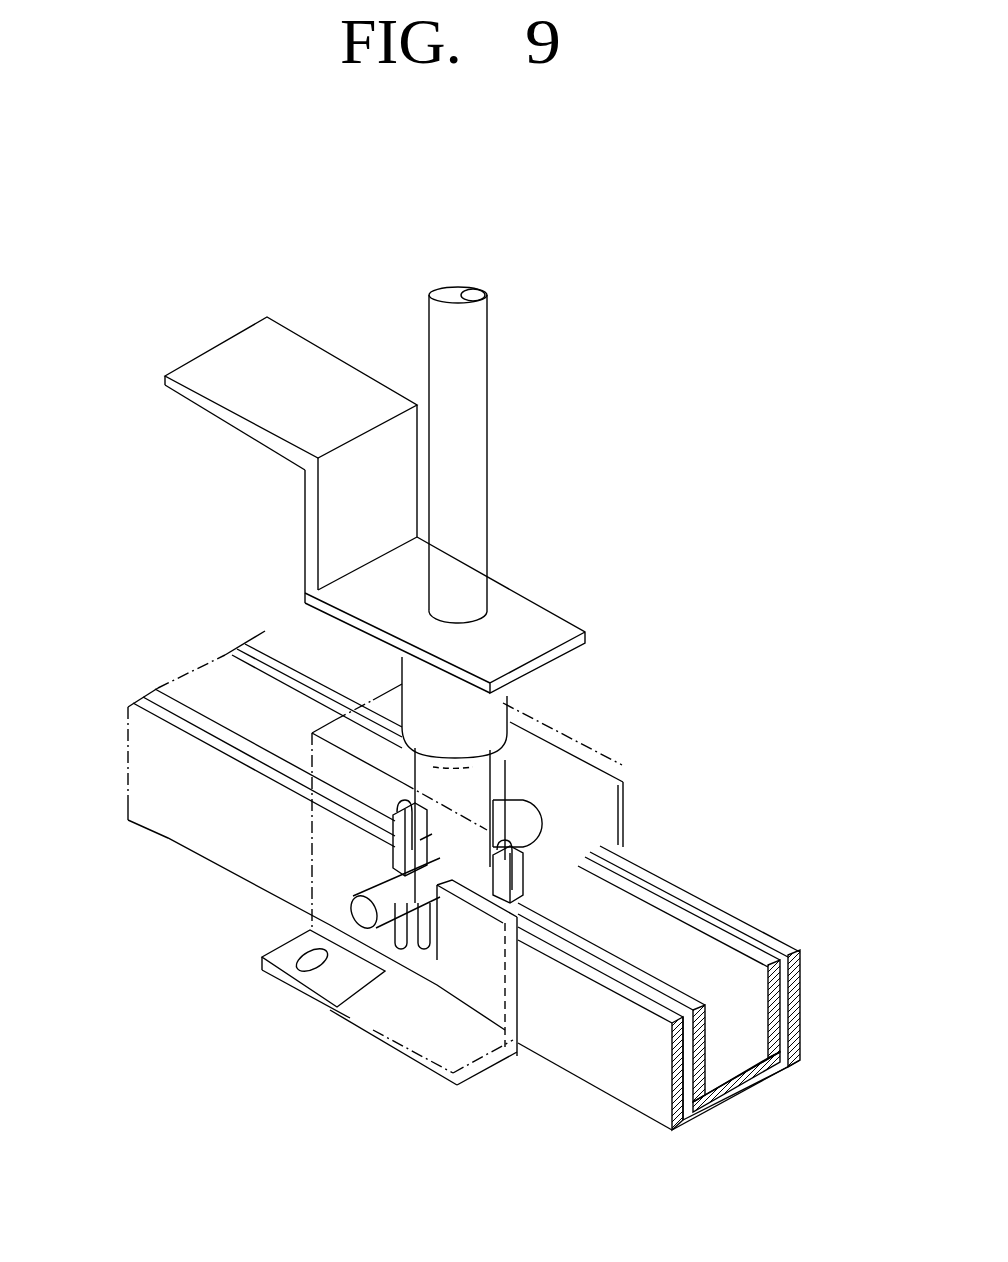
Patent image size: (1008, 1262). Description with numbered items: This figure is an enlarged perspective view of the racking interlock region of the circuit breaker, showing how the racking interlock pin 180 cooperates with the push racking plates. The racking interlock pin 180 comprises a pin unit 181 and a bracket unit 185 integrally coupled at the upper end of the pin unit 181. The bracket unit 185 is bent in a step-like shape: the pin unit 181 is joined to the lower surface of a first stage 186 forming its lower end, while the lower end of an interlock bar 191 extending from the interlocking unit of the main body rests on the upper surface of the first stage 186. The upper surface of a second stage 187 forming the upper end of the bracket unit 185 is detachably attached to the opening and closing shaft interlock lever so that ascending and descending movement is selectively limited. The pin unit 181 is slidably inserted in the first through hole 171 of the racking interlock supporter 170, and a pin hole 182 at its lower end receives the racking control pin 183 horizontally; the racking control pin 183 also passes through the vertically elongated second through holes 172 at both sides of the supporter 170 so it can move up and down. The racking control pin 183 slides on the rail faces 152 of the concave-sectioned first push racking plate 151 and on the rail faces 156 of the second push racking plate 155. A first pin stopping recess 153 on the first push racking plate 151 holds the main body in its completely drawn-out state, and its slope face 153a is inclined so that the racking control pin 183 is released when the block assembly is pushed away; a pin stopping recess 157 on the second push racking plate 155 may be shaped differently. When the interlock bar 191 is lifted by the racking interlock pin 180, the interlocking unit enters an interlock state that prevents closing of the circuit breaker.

The first push racking plate 151 is at (773, 1007).
The rail faces 152 is at (647, 977).
The first pin stopping recess 153 is at (622, 798).
The slope face 153a is at (530, 875).
The second push racking plate 155 is at (740, 1090).
The rail faces 156 is at (560, 953).
The pin stopping recess 157 is at (523, 797).
The racking interlock supporter 170 is at (365, 1012).
The first through hole 171 is at (400, 768).
The second through holes 172 is at (420, 845).
The racking interlock pin 180 is at (371, 492).
The pin unit 181 is at (293, 856).
The pin hole 182 is at (437, 872).
The racking control pin 183 is at (267, 965).
The bracket unit 185 is at (312, 534).
The first stage 186 is at (553, 628).
The second stage 187 is at (232, 358).
The interlock bar 191 is at (480, 412).